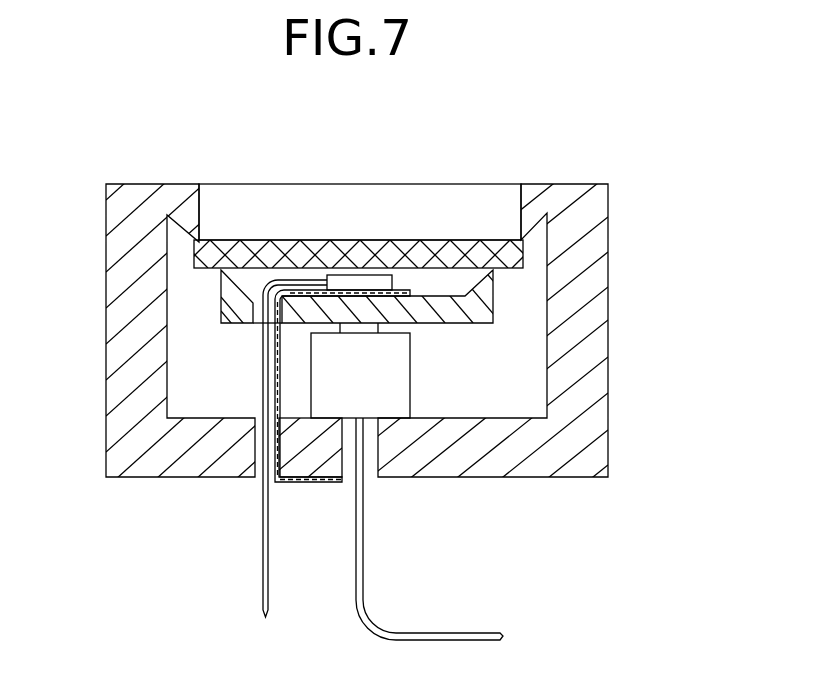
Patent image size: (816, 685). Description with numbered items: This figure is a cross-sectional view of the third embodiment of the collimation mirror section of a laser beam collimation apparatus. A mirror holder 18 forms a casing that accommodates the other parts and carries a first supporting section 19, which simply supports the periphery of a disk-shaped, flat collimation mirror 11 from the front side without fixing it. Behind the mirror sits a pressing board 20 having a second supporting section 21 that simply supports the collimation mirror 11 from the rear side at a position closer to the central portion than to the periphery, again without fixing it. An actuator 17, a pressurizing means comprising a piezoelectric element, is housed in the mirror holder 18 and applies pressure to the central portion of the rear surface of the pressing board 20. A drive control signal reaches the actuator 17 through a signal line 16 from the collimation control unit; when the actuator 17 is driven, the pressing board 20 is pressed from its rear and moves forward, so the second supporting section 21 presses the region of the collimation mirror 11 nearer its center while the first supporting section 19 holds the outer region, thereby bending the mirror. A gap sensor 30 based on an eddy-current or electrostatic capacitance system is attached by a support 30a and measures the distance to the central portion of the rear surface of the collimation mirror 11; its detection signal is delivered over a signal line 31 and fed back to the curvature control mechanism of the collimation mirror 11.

The collimation mirror 11 is at (210, 256).
The signal line 16 is at (433, 634).
The actuator 17 is at (415, 378).
The mirror holder 18 is at (577, 217).
The first supporting section 19 is at (188, 221).
The pressing board 20 is at (492, 298).
The second supporting section 21 is at (227, 296).
The gap sensor 30 is at (394, 291).
The support 30a is at (305, 483).
The signal line 31 is at (263, 546).